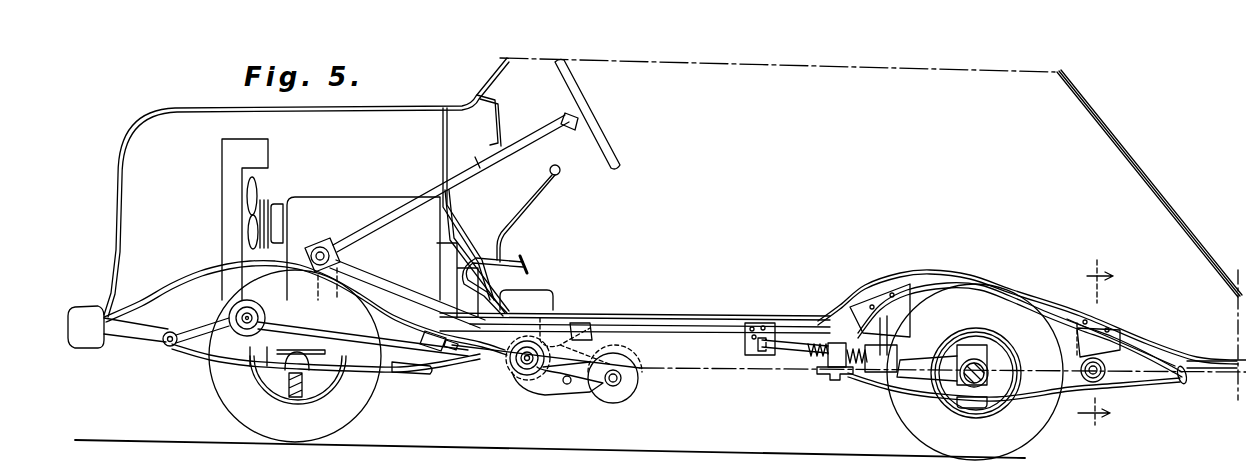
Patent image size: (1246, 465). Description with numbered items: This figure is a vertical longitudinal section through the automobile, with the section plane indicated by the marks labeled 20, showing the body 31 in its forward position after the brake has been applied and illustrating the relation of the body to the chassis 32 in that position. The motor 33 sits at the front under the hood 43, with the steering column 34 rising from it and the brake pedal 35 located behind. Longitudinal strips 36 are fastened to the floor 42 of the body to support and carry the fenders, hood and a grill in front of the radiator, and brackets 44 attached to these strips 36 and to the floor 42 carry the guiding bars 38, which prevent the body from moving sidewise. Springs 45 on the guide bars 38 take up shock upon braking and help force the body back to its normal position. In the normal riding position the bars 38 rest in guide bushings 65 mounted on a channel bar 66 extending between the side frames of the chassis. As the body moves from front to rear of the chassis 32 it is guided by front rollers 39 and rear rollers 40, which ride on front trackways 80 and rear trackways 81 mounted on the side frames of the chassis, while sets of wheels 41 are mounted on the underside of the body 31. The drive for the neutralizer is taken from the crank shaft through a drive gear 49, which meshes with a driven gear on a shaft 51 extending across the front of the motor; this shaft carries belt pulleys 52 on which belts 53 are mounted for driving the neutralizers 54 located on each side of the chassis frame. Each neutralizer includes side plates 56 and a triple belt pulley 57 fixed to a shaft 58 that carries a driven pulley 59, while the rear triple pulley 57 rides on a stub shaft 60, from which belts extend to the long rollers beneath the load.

The section line 20 is at (1102, 346).
The body 31 is at (1115, 147).
The chassis 32 is at (712, 368).
The motor 33 is at (337, 208).
The steering column 34 is at (476, 155).
The brake pedal 35 is at (528, 258).
The longitudinal strips 36 is at (673, 328).
The guiding bars 38 is at (790, 342).
The front rollers 39 is at (310, 400).
The rear rollers 40 is at (1155, 388).
The sets of wheels 41 is at (600, 318).
The floor 42 is at (572, 318).
The hood 43 is at (190, 93).
The brackets 44 is at (892, 300).
The springs 45 is at (835, 345).
The drive gear 49 is at (252, 219).
The shaft 51 is at (222, 326).
The belt pulleys 52 is at (233, 310).
The belts 53 is at (236, 326).
The neutralizers 54 is at (565, 386).
The side plates 56 is at (586, 393).
The triple belt pulley 57 is at (632, 392).
The shaft 58 is at (510, 364).
The driven pulley 59 is at (521, 376).
The stub shaft 60 is at (630, 378).
The guide bushings 65 is at (828, 373).
The channel bar 66 is at (855, 356).
The front trackways 80 is at (364, 342).
The rear trackways 81 is at (1127, 363).